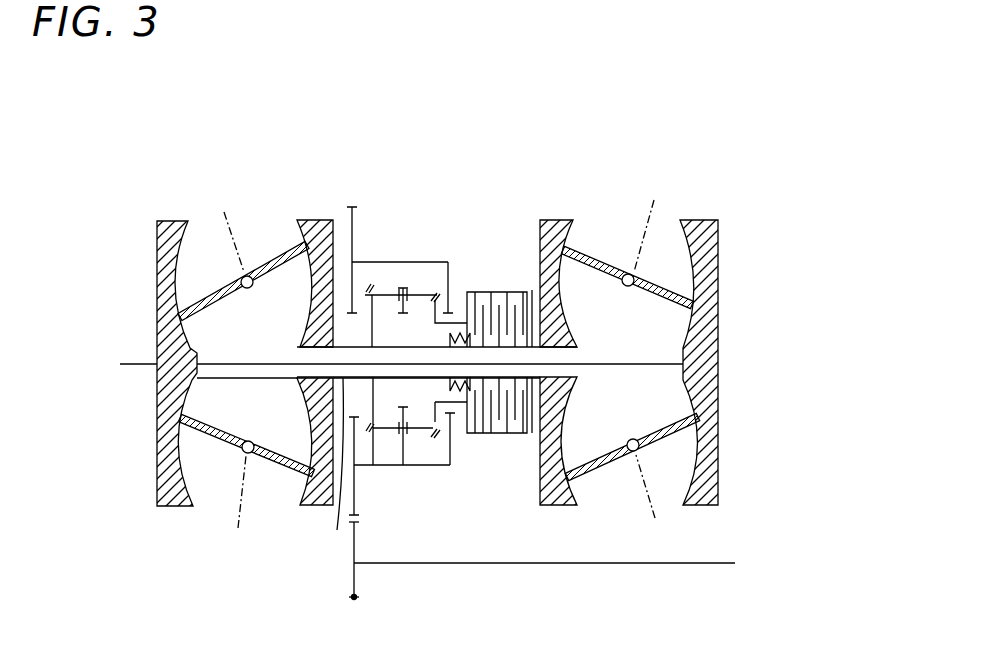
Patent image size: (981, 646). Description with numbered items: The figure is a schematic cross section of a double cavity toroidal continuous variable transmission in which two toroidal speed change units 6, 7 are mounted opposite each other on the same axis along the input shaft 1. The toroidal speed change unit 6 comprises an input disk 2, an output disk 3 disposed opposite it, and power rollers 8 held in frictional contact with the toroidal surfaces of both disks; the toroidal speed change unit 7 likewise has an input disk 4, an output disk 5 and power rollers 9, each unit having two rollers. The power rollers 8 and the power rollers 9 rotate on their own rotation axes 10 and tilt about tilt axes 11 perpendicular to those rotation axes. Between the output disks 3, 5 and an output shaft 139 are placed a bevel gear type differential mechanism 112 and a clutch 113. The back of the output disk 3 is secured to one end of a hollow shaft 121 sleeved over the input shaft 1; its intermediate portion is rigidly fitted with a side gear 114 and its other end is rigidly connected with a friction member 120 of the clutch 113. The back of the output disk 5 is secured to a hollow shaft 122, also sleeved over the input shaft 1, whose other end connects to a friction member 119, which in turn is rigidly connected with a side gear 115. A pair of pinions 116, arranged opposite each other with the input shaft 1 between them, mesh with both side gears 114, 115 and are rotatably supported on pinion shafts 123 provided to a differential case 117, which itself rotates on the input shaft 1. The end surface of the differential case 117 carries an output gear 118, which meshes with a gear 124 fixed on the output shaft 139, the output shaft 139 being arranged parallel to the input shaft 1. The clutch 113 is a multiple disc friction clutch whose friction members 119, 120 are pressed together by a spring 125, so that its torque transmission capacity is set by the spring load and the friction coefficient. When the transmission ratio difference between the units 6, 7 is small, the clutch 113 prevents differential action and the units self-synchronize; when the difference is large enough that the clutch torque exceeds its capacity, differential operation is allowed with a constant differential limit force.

The input shaft 1 is at (133, 366).
The input disk 2 is at (162, 268).
The output disk 3 is at (334, 222).
The input disk 4 is at (710, 252).
The output disk 5 is at (552, 221).
The toroidal speed change unit 6 is at (246, 205).
The toroidal speed change unit 7 is at (616, 212).
The power rollers 8 is at (277, 263).
The power rollers 9 is at (587, 262).
The rotation axes 10 is at (436, 363).
The tilt axes 11 is at (247, 289).
The differential mechanism 112 is at (398, 225).
The clutch 113 is at (492, 288).
The side gear 114 is at (371, 410).
The side gear 115 is at (436, 422).
The pinions 116 is at (414, 291).
The differential case 117 is at (377, 260).
The output gear 118 is at (359, 505).
The friction member 119 is at (493, 435).
The friction member 120 is at (531, 440).
The hollow shaft 121 is at (326, 487).
The hollow shaft 122 is at (530, 290).
The pinion shafts 123 is at (405, 450).
The gear 124 is at (358, 580).
The spring 125 is at (454, 335).
The output shaft 139 is at (541, 565).